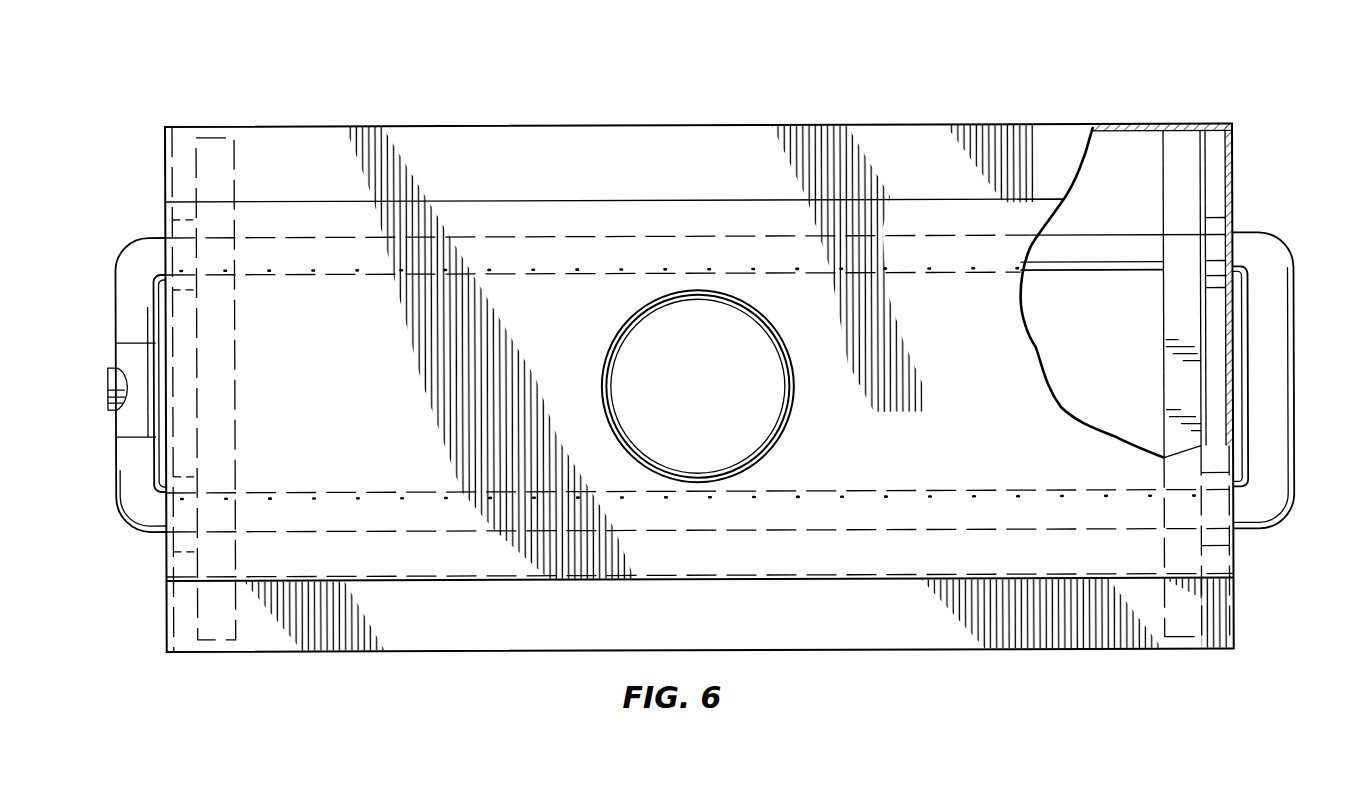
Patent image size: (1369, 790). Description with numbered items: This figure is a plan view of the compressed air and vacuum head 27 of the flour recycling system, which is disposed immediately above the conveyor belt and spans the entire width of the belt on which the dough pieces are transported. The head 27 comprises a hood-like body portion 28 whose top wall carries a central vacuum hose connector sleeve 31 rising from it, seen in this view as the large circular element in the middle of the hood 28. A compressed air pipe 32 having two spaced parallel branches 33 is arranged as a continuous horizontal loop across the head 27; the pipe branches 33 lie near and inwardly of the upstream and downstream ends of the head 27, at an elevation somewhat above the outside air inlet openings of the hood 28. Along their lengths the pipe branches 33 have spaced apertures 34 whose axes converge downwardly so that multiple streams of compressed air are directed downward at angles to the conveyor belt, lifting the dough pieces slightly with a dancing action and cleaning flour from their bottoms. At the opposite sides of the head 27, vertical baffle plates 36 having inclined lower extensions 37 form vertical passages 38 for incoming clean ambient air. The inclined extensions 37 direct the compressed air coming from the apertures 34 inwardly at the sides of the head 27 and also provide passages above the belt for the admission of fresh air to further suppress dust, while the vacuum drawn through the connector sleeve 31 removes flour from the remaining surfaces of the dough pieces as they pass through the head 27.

The compressed air and vacuum head 27 is at (545, 158).
The hood-like body portion 28 is at (361, 362).
The central vacuum hose connector sleeve 31 is at (790, 420).
The compressed air pipe 32 is at (118, 417).
The pipe branches 33 is at (1080, 271).
The spaced apertures 34 is at (378, 268).
The vertical baffle plates 36 is at (198, 463).
The inclined lower extensions 37 is at (222, 420).
The vertical passages 38 is at (177, 325).